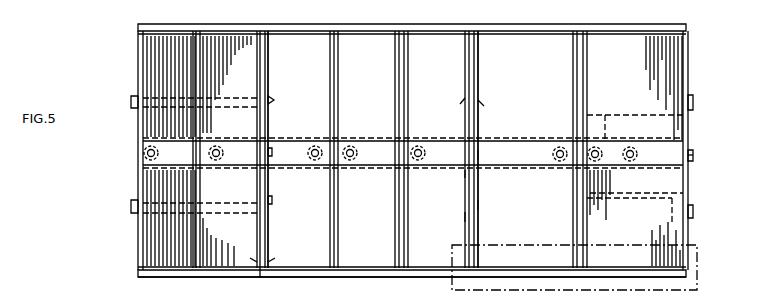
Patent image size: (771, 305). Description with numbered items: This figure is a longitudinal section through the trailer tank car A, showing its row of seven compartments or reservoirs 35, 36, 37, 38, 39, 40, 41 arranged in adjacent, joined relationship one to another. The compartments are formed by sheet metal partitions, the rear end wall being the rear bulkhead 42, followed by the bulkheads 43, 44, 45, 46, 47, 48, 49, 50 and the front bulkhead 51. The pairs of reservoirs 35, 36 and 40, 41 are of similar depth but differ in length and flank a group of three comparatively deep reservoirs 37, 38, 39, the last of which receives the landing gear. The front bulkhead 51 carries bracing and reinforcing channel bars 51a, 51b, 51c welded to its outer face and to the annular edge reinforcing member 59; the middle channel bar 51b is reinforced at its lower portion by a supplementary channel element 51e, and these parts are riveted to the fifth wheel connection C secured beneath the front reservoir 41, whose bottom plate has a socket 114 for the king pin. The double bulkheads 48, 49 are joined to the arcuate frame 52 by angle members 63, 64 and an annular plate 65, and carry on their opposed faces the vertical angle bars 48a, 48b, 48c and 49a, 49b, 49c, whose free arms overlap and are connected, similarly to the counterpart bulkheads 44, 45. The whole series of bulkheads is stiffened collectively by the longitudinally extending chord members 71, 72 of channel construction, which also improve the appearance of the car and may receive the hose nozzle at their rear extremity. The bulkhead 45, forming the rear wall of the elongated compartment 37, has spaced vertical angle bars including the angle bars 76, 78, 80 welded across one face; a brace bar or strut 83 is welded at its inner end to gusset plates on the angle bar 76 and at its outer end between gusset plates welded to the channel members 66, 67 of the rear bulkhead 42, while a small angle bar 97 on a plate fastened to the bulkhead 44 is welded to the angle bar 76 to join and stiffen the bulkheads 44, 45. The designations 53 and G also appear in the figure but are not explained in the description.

The rear compartment 35 is at (171, 48).
The chord member 72 is at (441, 30).
The trailer tank car A is at (686, 35).
The rear bulkhead 42 is at (138, 70).
The bulkhead 43 is at (201, 88).
The bulkhead 44 is at (257, 70).
The bulkhead 45 is at (268, 70).
The bulkhead 46 is at (330, 70).
The bulkhead 47 is at (395, 70).
The bulkhead 48 is at (465, 70).
The bulkhead 49 is at (478, 73).
The bulkhead 50 is at (573, 70).
The front bulkhead 51 is at (688, 72).
The channel bar 51a is at (693, 214).
The middle channel bar 51b is at (693, 154).
The channel bar 51c is at (693, 103).
The supplementary channel element 51e is at (693, 158).
The channel member 66 is at (131, 100).
The channel member 67 is at (131, 208).
The brace bar or strut member 83 is at (138, 225).
The angle bar 76 is at (274, 98).
The angle bar 97 is at (274, 106).
The compartment 36 is at (231, 123).
The compartment 37 is at (296, 123).
The compartment 38 is at (363, 123).
The compartment 39 is at (431, 123).
The compartment 40 is at (525, 121).
The front reservoir 41 is at (635, 128).
The cross member 53 is at (546, 166).
The angle bar 78 is at (272, 152).
The angle bar 80 is at (272, 202).
The socket 114 is at (403, 154).
The angle bar 48a is at (470, 214).
The angle bar 48b is at (471, 172).
The angle bar 48c is at (467, 102).
The angle bar 49a is at (480, 208).
The angle bar 49b is at (481, 150).
The angle bar 49c is at (480, 104).
The angle member 63 is at (253, 260).
The angle member 64 is at (271, 260).
The annular plate 65 is at (262, 279).
The arcuate frame 52 is at (306, 271).
The chord member 71 is at (413, 278).
The annular edge reinforcing member 59 is at (686, 278).
The section G is at (654, 290).
The fifth wheel supporting assembly C is at (640, 193).